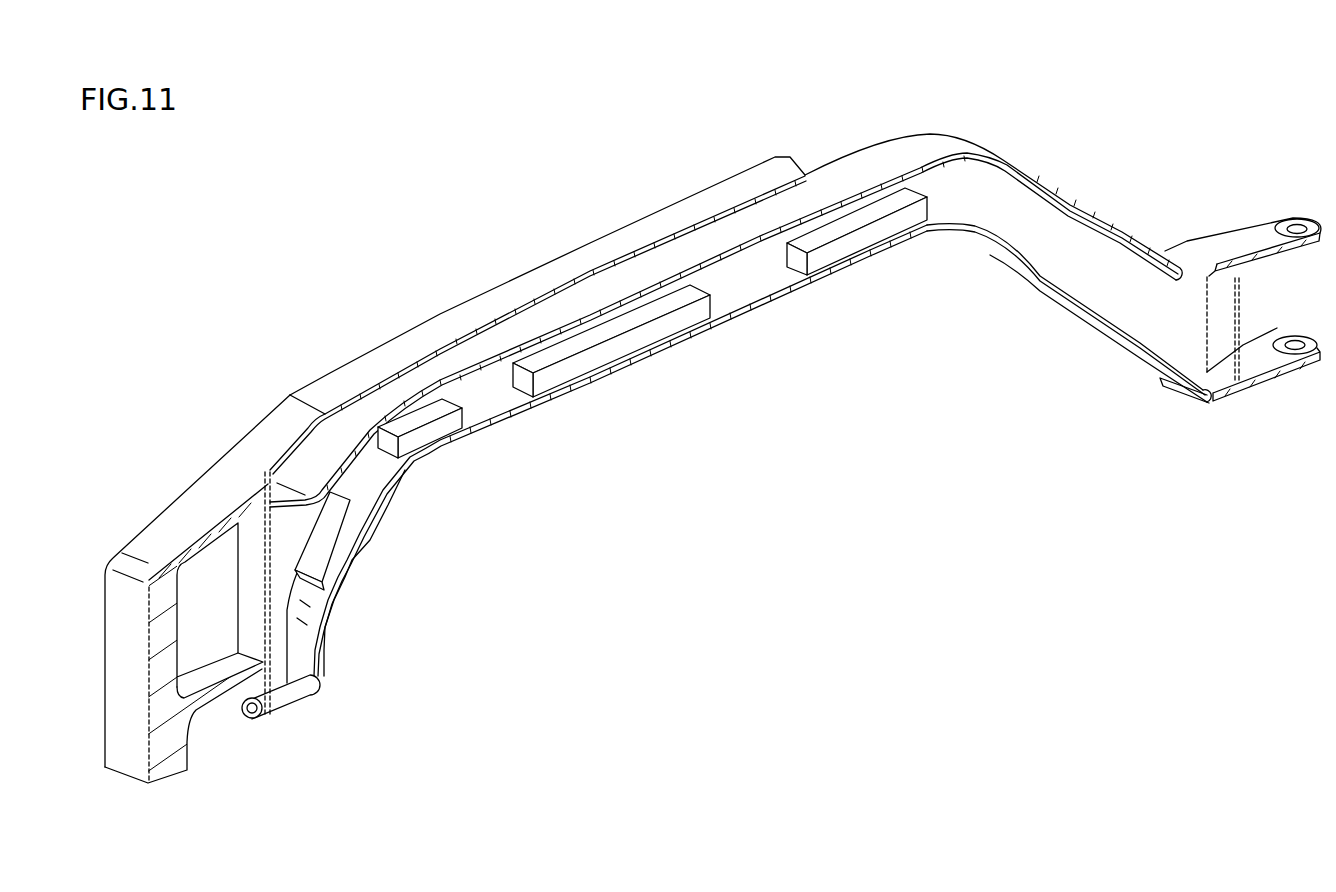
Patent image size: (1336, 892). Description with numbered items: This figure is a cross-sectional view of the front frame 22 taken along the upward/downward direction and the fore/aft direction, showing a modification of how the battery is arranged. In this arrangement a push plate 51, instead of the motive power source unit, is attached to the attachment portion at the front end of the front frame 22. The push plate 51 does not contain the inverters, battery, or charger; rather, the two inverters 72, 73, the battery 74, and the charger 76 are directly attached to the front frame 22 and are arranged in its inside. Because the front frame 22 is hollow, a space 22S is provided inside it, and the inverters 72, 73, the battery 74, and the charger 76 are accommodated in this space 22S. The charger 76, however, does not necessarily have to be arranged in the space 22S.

The front frame 22 is at (436, 309).
The space 22S is at (490, 387).
The push plate 51 is at (150, 537).
The inverter 72 is at (346, 548).
The inverter 73 is at (438, 431).
The battery 74 is at (630, 343).
The charger 76 is at (858, 241).